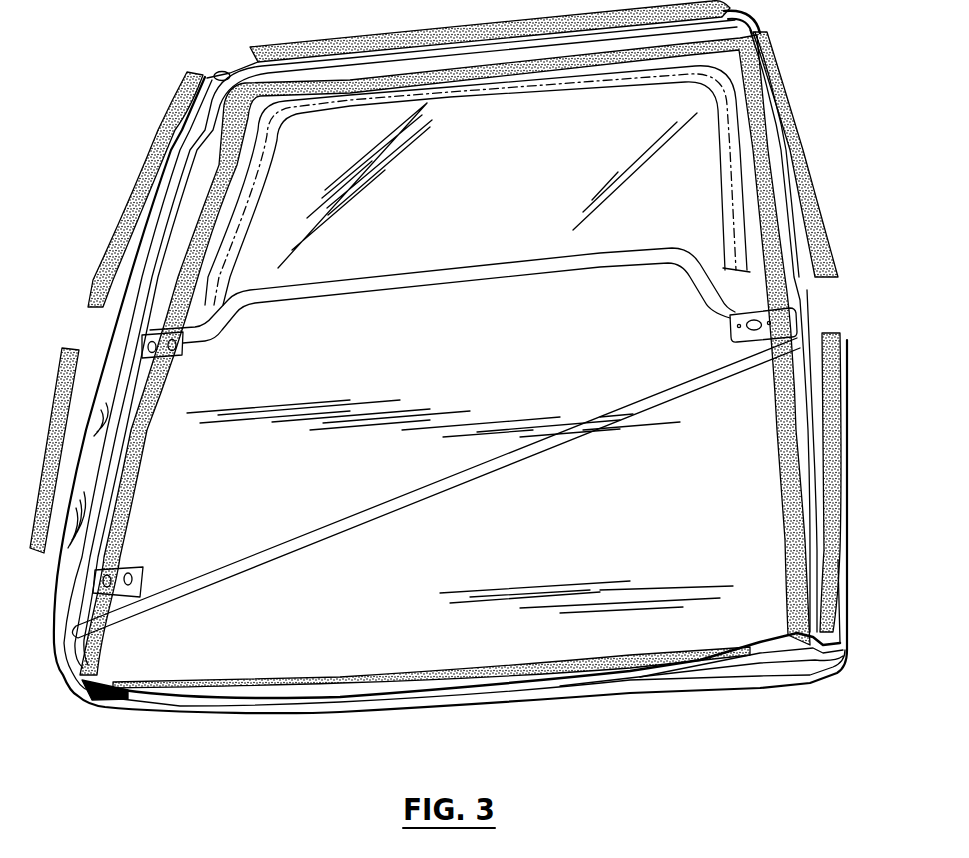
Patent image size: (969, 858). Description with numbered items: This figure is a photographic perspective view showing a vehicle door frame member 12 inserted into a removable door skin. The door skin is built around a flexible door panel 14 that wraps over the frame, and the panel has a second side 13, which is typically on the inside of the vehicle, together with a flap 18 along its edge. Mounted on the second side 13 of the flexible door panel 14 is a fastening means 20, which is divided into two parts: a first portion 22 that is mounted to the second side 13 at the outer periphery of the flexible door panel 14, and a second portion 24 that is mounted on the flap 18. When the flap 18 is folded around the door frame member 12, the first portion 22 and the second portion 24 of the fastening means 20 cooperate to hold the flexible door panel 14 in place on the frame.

The vehicle door frame member 12 is at (732, 332).
The second side 13 is at (160, 660).
The flexible door panel 14 is at (730, 557).
The flap 18 is at (110, 245).
The fastening means 20 is at (417, 670).
The first portion 22 is at (157, 390).
The second portion 24 is at (62, 403).